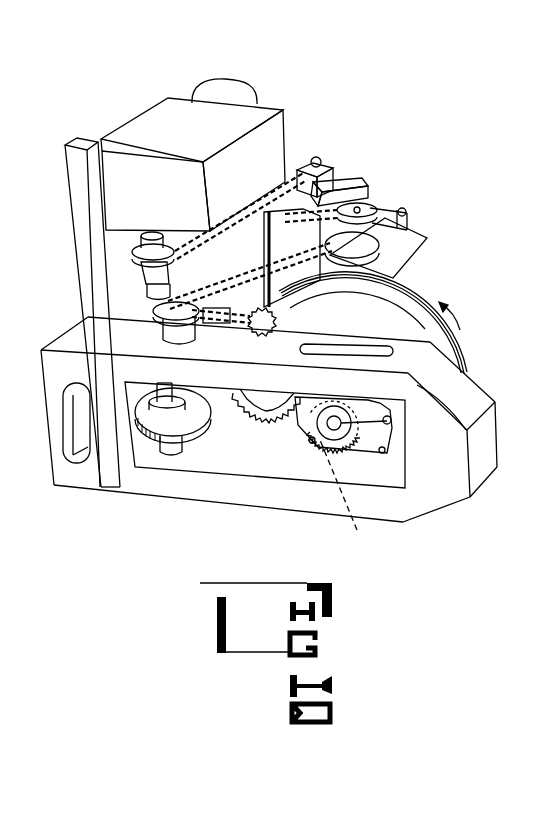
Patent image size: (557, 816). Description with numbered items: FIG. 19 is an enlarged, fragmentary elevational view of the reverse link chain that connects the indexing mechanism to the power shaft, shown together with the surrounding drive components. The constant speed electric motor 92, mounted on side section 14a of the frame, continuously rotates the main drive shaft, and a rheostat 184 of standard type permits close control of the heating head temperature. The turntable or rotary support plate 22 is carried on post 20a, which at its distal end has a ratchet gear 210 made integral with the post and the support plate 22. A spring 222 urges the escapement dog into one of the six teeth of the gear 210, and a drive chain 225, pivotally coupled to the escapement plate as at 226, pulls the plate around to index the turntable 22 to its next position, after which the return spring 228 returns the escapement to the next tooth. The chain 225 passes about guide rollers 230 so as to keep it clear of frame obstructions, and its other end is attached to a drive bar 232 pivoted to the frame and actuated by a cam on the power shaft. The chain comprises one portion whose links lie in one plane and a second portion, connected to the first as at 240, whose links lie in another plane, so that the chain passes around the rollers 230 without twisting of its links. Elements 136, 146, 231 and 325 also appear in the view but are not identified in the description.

The side section 14a is at (427, 247).
The post 20a is at (393, 426).
The support plate 22 is at (462, 346).
The constant speed electric motor 92 is at (258, 92).
The sprocket 136 is at (140, 403).
The bracket block 146 is at (340, 170).
The rheostat 184 is at (157, 123).
The ratchet gear 210 is at (351, 507).
The spring 222 is at (357, 435).
The drive chain 225 is at (170, 345).
The pivotal coupling 226 is at (387, 422).
The return spring 228 is at (235, 398).
The guide rollers 230 is at (160, 298).
The arm 231 is at (406, 213).
The drive bar 232 is at (402, 208).
The chain connection 240 is at (60, 312).
The element 325 is at (5, 542).